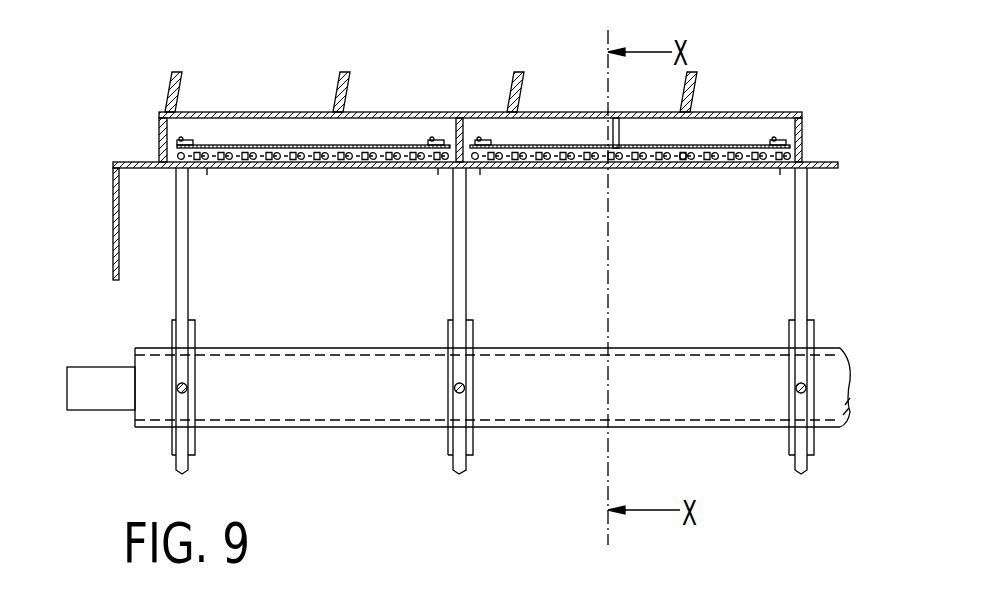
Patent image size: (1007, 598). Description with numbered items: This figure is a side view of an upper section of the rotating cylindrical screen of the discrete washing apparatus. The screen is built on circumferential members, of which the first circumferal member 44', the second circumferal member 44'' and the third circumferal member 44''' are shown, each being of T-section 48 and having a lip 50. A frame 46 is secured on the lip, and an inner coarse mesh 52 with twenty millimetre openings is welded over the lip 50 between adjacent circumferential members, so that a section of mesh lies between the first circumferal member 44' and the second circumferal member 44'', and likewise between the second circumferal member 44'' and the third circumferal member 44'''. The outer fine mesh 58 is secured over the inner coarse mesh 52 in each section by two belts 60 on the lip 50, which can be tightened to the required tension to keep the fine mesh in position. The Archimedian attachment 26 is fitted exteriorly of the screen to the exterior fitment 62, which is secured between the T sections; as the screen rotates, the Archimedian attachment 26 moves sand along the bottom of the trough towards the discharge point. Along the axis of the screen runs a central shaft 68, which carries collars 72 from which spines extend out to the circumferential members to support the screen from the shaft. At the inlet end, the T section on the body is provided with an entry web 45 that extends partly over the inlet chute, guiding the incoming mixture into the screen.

The circumferal member 44' is at (112, 82).
The circumferal member 44'' is at (478, 82).
The circumferal member 44''' is at (846, 110).
The Archimedian attachment 26 is at (168, 98).
The belt 60 is at (187, 140).
The exterior fitment 62 is at (290, 112).
The outer fine mesh 58 is at (617, 147).
The frame 46 is at (711, 155).
The T-section 48 is at (807, 158).
The entry web 45 is at (113, 208).
The lip 50 is at (207, 168).
The inner coarse mesh 52 is at (683, 158).
The collar 72 is at (805, 278).
The central shaft 68 is at (330, 410).